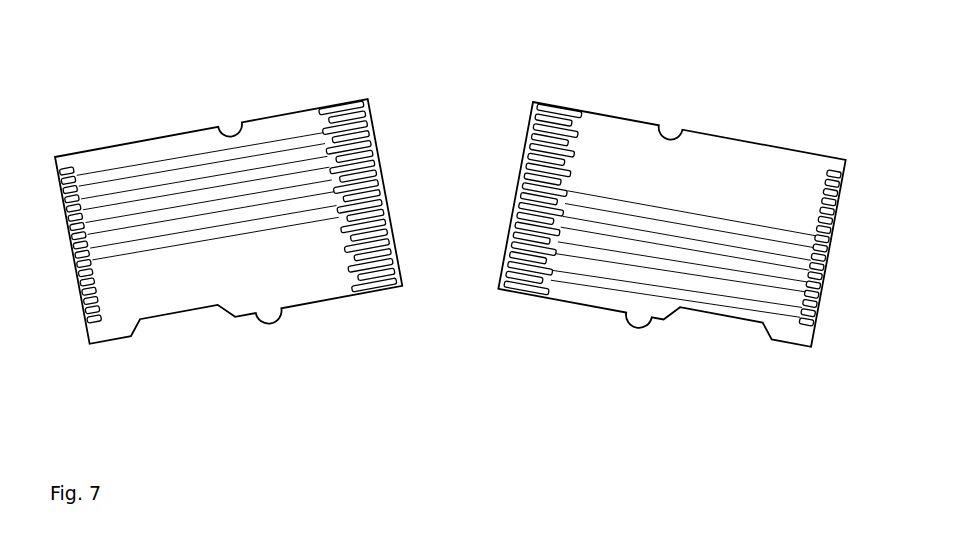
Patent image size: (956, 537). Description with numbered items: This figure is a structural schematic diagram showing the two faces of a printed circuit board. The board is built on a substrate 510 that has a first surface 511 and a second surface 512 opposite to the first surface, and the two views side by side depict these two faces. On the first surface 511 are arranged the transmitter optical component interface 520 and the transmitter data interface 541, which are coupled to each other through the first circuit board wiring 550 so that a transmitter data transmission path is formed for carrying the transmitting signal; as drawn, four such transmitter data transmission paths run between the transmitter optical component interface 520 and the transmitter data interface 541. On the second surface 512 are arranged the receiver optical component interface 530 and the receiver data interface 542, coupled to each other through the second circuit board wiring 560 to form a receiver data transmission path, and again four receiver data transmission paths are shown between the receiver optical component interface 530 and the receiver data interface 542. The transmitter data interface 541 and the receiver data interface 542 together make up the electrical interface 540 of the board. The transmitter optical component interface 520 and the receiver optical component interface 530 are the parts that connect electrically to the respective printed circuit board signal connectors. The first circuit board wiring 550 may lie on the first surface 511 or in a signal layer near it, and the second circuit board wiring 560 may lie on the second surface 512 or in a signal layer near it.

The substrate 510 is at (517, 392).
The first surface 511 is at (300, 272).
The second surface 512 is at (630, 285).
The transmitter optical component interface 520 is at (80, 187).
The receiver optical component interface 530 is at (823, 200).
The electrical interface 540 is at (497, 53).
The transmitter data interface 541 is at (373, 160).
The receiver data interface 542 is at (520, 187).
The first circuit board wiring 550 is at (217, 245).
The second circuit board wiring 560 is at (750, 287).